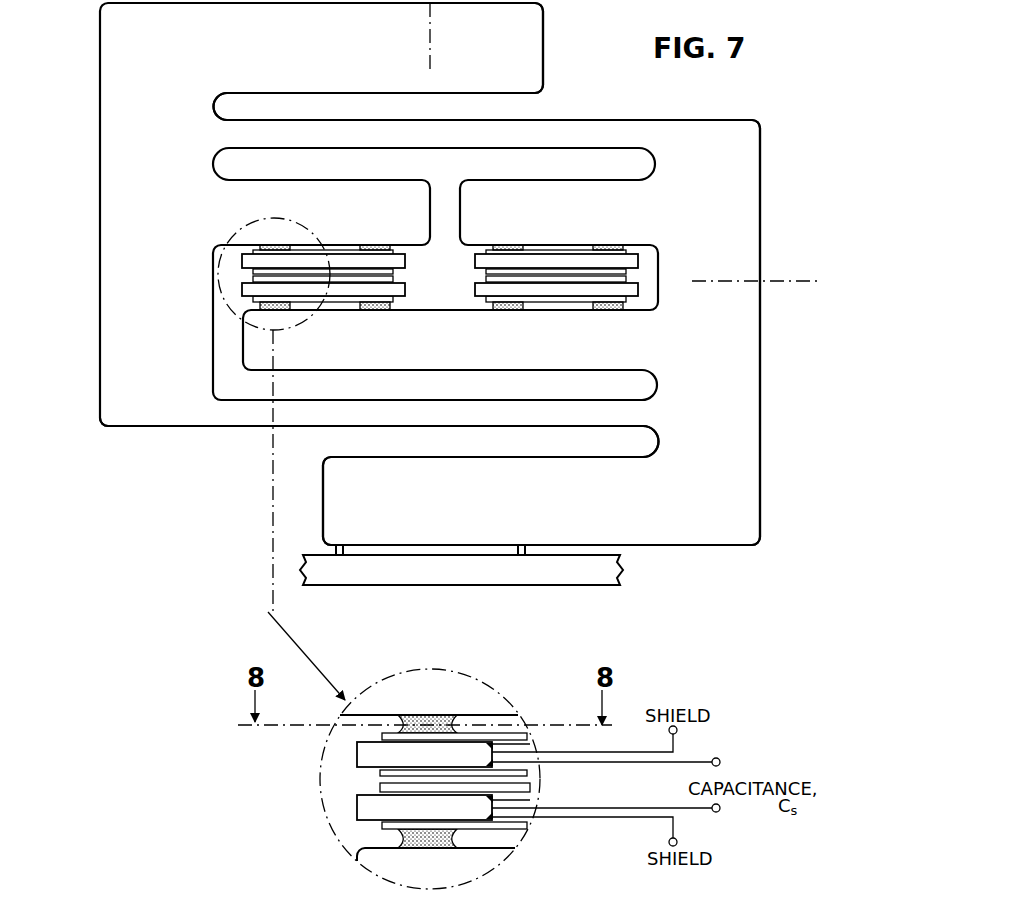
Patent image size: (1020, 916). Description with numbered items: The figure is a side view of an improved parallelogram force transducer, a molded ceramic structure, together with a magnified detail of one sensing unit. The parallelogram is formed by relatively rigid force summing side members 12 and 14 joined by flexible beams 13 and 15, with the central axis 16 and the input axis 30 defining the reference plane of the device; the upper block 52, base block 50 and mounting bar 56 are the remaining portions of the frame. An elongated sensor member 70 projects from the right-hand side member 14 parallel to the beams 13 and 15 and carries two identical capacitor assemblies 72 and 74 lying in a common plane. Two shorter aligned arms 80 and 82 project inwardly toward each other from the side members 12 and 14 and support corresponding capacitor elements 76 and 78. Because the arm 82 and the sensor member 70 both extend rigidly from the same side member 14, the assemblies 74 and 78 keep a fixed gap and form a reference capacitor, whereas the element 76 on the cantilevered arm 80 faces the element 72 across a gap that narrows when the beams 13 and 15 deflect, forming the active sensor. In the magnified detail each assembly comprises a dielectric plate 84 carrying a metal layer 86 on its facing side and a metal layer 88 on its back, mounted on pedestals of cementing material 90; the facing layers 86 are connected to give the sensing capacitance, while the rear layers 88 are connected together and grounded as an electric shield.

The force summing side member 12 is at (123, 219).
The flexible beam 13 is at (528, 134).
The force summing side member 14 is at (737, 234).
The flexible beam 15 is at (363, 417).
The central axis 16 is at (795, 283).
The input axis 30 is at (433, 59).
The base block 50 is at (538, 519).
The top block 52 is at (294, 59).
The mounting bar 56 is at (622, 576).
The elongated sensor member 70 is at (463, 351).
The capacitor assembly 72 is at (243, 288).
The capacitor assembly 74 is at (640, 293).
The capacitor element 76 is at (242, 259).
The capacitor element 78 is at (476, 263).
The arm 80 is at (369, 217).
The arm 82 is at (571, 222).
The dielectric plate 84 is at (444, 766).
The metal layer 86 is at (380, 787).
The metal layer 88 is at (382, 736).
The pedestals of cementing material 90 is at (427, 718).